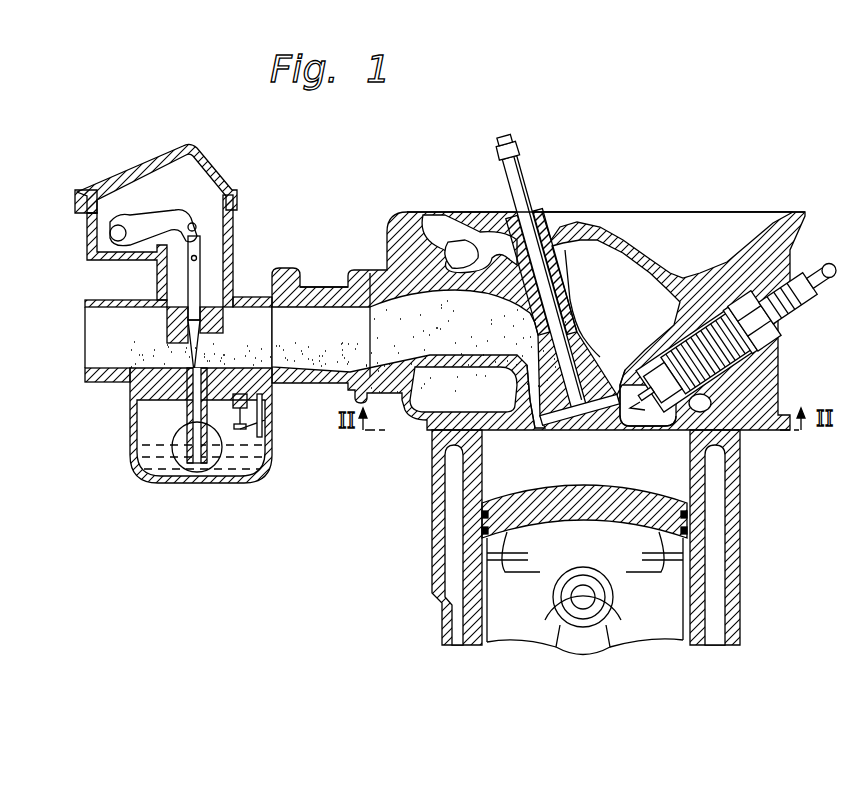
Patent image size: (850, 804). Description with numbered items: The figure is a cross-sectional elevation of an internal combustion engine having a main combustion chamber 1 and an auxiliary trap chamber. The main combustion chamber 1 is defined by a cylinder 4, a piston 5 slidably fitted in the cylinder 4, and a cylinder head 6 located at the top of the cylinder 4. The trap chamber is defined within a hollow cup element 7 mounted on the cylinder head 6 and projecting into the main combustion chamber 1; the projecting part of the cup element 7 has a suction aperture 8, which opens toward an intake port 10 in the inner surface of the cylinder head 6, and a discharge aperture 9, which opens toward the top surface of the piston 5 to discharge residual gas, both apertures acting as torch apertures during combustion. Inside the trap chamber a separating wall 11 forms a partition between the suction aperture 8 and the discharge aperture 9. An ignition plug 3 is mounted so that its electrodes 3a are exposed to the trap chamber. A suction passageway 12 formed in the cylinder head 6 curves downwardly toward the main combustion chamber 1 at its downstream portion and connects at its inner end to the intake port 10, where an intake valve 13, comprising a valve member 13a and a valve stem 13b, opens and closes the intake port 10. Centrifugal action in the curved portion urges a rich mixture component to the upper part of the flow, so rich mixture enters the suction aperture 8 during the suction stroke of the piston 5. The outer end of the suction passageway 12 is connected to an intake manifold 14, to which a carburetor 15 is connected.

The main combustion chamber 1 is at (580, 485).
The ignition plug 3 is at (733, 376).
The electrodes 3a is at (728, 368).
The cylinder 4 is at (697, 480).
The piston 5 is at (661, 540).
The cylinder head 6 is at (742, 395).
The hollow cup element 7 is at (677, 430).
The suction aperture 8 is at (617, 414).
The discharge aperture 9 is at (650, 422).
The intake port 10 is at (537, 421).
The separating wall 11 is at (634, 421).
The suction passageway 12 is at (460, 328).
The intake valve 13 is at (557, 306).
The valve member 13a is at (577, 414).
The valve stem 13b is at (523, 183).
The intake manifold 14 is at (323, 291).
The carburetor 15 is at (241, 297).